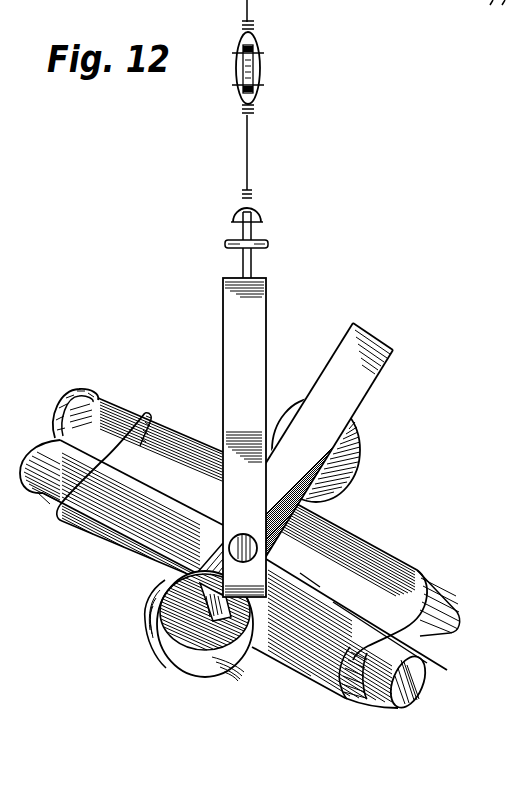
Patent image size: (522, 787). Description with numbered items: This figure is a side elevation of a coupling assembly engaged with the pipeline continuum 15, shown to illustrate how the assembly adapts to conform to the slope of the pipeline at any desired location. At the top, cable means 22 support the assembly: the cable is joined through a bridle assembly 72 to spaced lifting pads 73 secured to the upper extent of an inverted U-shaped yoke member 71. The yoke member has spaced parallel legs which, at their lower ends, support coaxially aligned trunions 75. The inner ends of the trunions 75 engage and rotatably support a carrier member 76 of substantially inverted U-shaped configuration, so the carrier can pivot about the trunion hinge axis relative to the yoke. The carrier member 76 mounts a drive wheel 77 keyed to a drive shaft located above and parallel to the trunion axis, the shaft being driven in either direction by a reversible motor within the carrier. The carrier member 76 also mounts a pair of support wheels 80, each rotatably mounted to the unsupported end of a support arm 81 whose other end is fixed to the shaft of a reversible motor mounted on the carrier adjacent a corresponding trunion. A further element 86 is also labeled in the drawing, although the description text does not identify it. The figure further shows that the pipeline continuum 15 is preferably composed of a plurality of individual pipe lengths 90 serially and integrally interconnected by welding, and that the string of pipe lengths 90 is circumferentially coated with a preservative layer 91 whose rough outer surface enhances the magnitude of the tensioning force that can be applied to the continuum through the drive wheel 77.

The pipeline continuum 15 is at (325, 681).
The cable means 22 is at (250, 22).
The yoke member 71 is at (222, 319).
The bridle assembly 72 is at (249, 160).
The lifting pads 73 is at (256, 210).
The trunions 75 is at (258, 540).
The carrier member 76 is at (375, 334).
The drive wheel 77 is at (357, 465).
The support wheels 80 is at (173, 653).
The support arm 81 is at (203, 605).
The saddle 86 is at (56, 431).
The pipe lengths 90 is at (435, 607).
The preservative layer 91 is at (145, 410).